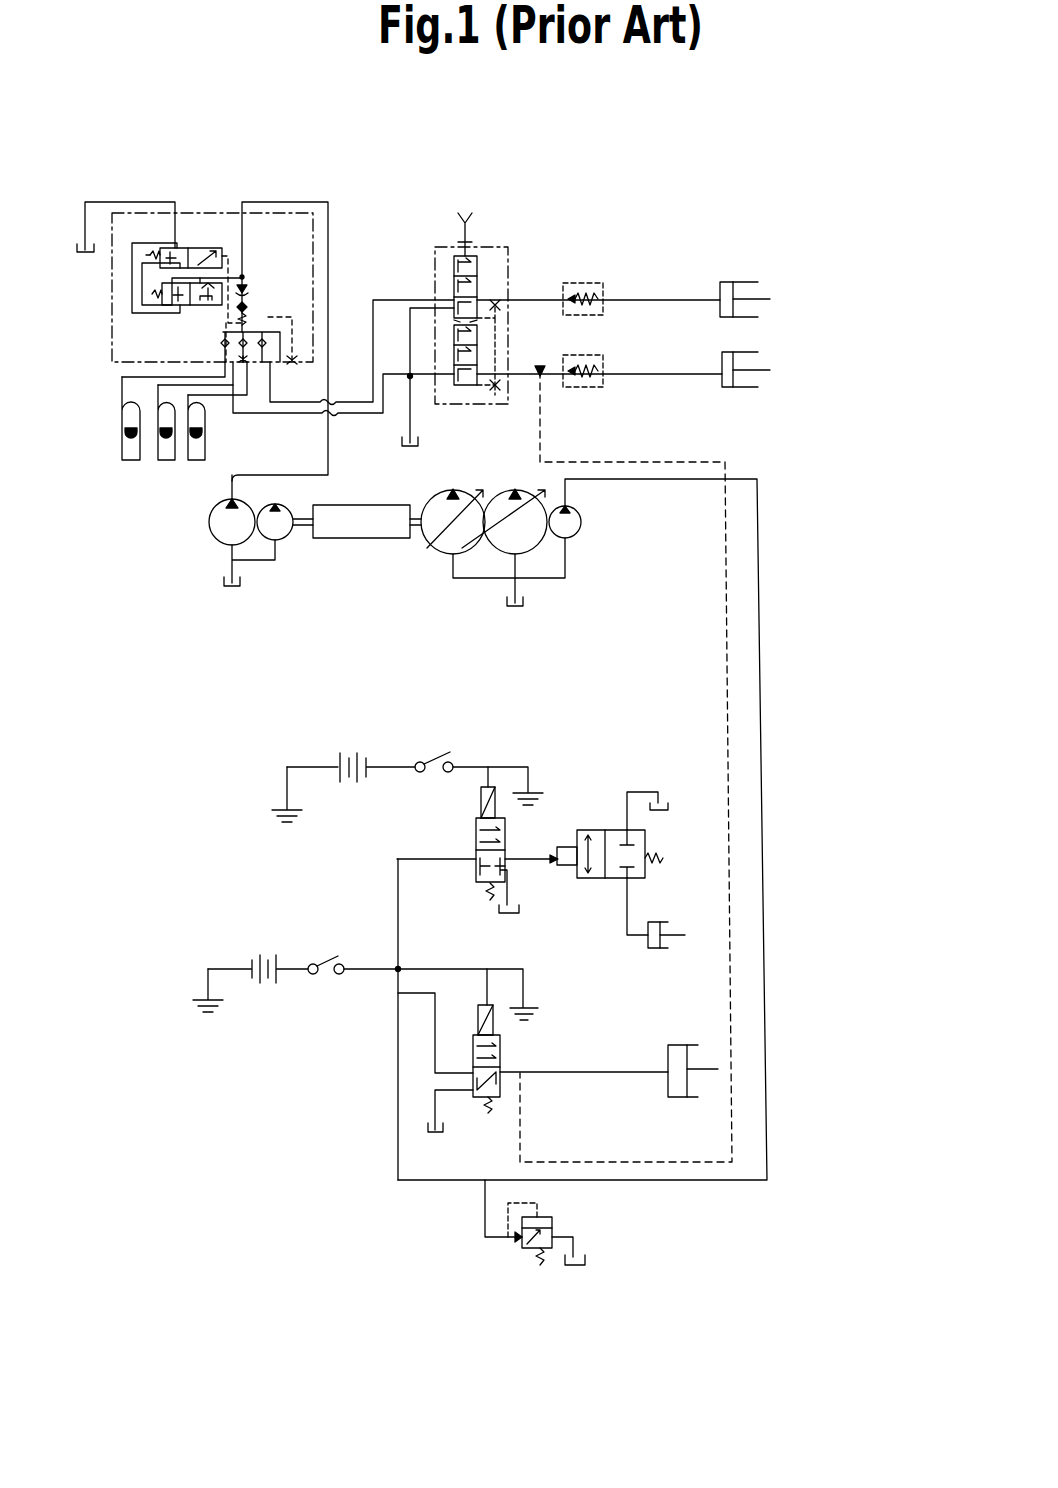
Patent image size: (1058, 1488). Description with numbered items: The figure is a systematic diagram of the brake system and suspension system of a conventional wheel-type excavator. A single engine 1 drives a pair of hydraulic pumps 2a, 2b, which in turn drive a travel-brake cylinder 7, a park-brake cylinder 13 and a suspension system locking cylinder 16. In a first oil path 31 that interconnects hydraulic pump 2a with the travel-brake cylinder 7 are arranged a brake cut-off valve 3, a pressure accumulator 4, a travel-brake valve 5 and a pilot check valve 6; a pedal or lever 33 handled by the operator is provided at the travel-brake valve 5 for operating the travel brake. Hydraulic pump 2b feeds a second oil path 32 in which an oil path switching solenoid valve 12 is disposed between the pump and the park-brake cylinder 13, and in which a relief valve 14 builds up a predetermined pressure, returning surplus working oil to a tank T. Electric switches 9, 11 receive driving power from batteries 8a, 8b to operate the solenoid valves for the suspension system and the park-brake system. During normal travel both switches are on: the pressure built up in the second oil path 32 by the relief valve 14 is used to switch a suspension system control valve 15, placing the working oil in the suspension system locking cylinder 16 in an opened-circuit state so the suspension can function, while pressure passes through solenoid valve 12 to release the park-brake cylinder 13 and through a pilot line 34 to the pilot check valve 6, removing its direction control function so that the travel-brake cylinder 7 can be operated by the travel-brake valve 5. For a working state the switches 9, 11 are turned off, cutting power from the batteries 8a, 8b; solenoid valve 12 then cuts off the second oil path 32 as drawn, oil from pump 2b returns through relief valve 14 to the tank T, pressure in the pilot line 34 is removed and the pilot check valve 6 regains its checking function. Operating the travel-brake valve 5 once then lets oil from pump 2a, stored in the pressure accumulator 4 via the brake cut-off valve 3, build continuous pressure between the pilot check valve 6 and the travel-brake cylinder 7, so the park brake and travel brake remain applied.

The engine 1 is at (365, 540).
The hydraulic pump 2a is at (210, 542).
The hydraulic pump 2b is at (582, 542).
The brake cut-off valve 3 is at (222, 212).
The pressure accumulator 4 is at (123, 445).
The travel-brake valve 5 is at (512, 258).
The pilot check valve 6 is at (607, 282).
The travel-brake cylinder 7 is at (740, 282).
The battery 8a is at (348, 755).
The battery 8b is at (260, 960).
The electric switch 9 is at (437, 752).
The electric switch 11 is at (328, 960).
The oil path switching solenoid valve 12 is at (473, 1047).
The park-brake cylinder 13 is at (690, 1045).
The relief valve 14 is at (513, 1237).
The suspension system control valve 15 is at (598, 830).
The suspension system locking cylinder 16 is at (655, 922).
The first oil path 31 is at (479, 531).
The second oil path 32 is at (758, 557).
The pedal or lever 33 is at (473, 215).
The pilot line 34 is at (727, 698).
The tank T is at (575, 1267).